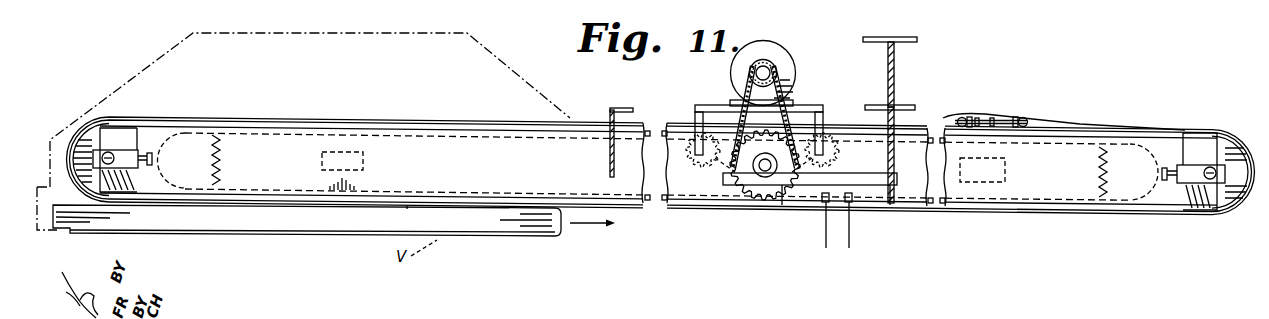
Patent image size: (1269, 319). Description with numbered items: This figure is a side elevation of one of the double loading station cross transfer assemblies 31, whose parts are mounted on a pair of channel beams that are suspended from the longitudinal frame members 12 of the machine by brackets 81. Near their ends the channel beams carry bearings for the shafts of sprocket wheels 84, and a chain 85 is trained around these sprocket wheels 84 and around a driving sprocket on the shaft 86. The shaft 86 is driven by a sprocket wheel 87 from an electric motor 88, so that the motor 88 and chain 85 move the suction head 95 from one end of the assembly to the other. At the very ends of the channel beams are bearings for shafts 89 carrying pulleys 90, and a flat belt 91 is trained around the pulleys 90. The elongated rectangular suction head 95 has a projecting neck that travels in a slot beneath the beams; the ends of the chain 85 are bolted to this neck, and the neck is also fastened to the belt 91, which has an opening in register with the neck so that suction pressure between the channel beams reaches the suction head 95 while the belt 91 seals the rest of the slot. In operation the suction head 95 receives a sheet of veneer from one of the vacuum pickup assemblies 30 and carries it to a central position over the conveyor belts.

The longitudinal beam 12 is at (917, 37).
The vacuum pickup assembly 30 is at (150, 70).
The double loading station cross transfer assembly 31 is at (1036, 105).
The bracket 81 is at (632, 108).
The sprocket wheel 84 is at (214, 160).
The chain 85 is at (433, 133).
The shaft 86 is at (758, 170).
The sprocket wheel 87 is at (768, 195).
The electric motor 88 is at (784, 64).
The shaft 89 is at (113, 154).
The pulley 90 is at (93, 130).
The flat belt 91 is at (328, 117).
The suction head 95 is at (324, 230).